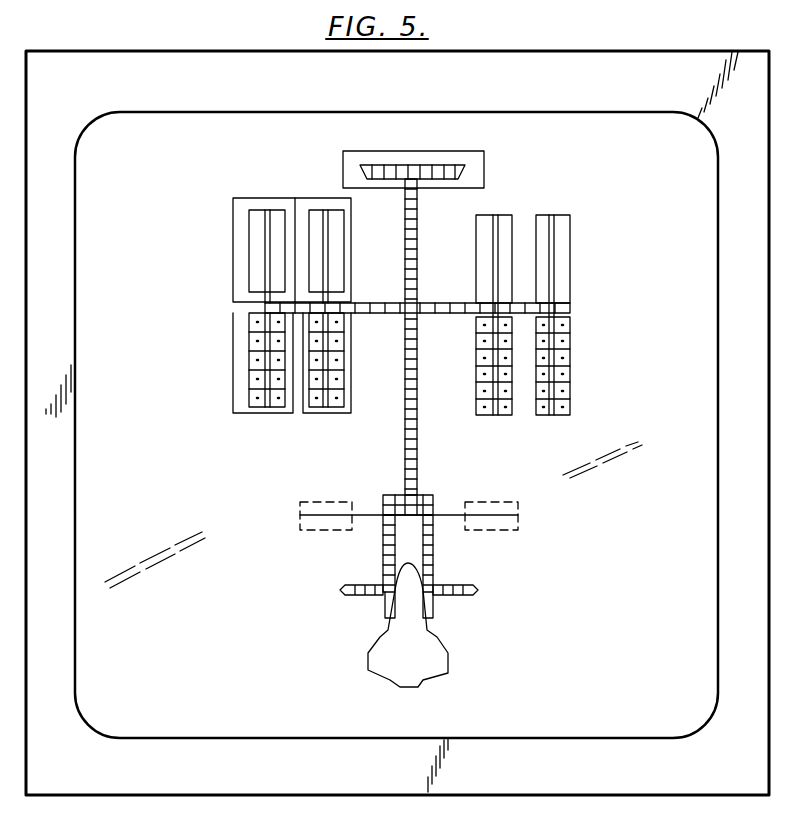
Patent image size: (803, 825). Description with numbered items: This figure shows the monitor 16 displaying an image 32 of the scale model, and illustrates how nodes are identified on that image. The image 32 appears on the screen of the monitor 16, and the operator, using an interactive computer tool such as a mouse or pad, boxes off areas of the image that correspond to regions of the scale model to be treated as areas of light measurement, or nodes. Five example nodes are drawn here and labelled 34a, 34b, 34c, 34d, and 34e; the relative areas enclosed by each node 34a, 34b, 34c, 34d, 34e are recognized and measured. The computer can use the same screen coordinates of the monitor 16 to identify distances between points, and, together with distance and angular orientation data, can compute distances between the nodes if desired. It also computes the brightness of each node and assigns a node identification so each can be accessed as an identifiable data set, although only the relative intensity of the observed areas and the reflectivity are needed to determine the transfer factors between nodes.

The monitor 16 is at (548, 51).
The image 32 is at (570, 248).
The node 34a is at (233, 230).
The node 34b is at (238, 370).
The node 34c is at (322, 183).
The node 34d is at (484, 170).
The node 34e is at (351, 405).